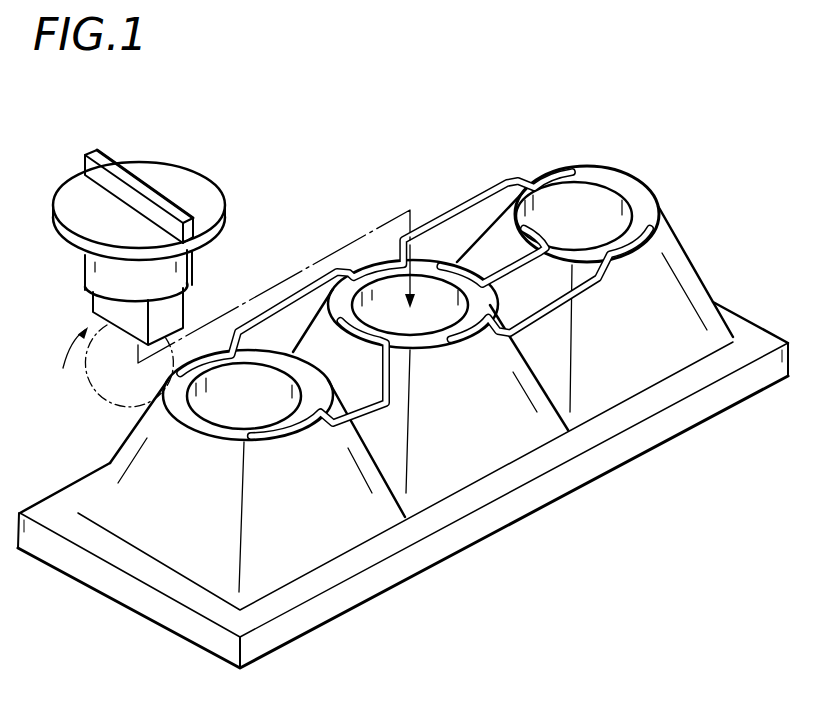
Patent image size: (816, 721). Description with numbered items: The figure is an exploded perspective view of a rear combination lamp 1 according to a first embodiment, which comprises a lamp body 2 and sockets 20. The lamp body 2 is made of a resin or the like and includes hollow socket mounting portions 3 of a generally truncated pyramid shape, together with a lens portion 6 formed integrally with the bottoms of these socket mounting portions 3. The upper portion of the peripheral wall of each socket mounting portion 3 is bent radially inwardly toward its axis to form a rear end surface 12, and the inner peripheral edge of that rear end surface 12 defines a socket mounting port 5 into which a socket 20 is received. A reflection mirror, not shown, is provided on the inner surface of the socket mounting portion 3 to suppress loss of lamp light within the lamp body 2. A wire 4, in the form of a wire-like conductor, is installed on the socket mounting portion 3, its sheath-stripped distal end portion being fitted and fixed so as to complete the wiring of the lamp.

The rear combination lamp 1 is at (422, 138).
The lamp body 2 is at (690, 206).
The socket mounting portion 3 is at (335, 517).
The wire 4 is at (480, 263).
The socket mounting port 5 is at (583, 203).
The lens portion 6 is at (115, 590).
The rear end surface 12 is at (635, 193).
The socket 20 is at (234, 176).